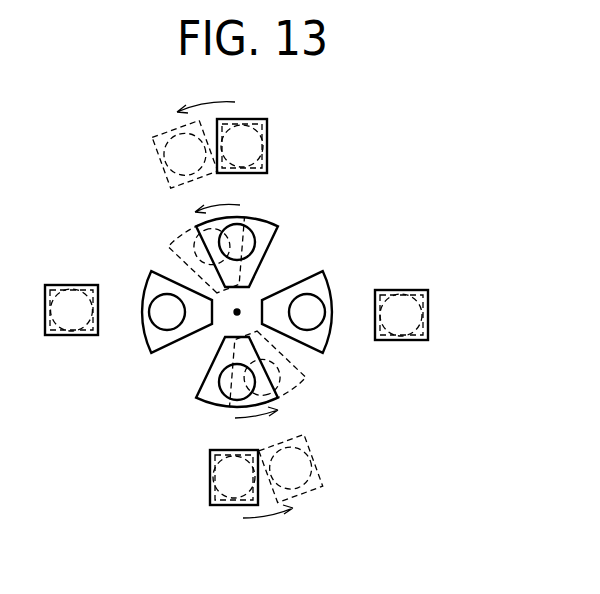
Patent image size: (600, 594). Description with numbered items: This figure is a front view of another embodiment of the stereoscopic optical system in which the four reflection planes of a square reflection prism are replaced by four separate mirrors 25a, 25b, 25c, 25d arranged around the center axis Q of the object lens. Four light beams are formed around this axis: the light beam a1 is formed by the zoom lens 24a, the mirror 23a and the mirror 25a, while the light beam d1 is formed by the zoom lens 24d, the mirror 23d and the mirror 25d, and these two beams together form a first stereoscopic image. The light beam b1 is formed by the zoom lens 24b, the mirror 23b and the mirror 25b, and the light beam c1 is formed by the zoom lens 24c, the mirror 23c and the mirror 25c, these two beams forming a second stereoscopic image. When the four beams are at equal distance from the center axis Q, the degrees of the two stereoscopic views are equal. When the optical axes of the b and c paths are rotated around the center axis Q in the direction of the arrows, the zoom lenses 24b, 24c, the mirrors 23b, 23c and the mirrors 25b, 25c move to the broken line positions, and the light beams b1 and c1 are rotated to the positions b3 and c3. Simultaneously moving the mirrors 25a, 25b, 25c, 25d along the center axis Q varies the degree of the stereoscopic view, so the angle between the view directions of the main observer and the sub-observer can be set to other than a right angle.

The center axis Q is at (240, 310).
The mirror 23a is at (62, 316).
The mirror 23b is at (246, 140).
The mirror 23c is at (230, 501).
The mirror 23d is at (443, 338).
The zoom lens 24a is at (68, 300).
The zoom lens 24b is at (250, 147).
The zoom lens 24c is at (223, 477).
The zoom lens 24d is at (402, 323).
The mirror 25a is at (150, 345).
The mirror 25b is at (267, 225).
The mirror 25c is at (192, 400).
The mirror 25d is at (322, 277).
The light beam a1 is at (152, 284).
The light beam b1 is at (240, 232).
The light beam c1 is at (228, 400).
The light beam d1 is at (330, 328).
The rotated position of light beam b3 is at (197, 242).
The rotated position of light beam c3 is at (273, 372).